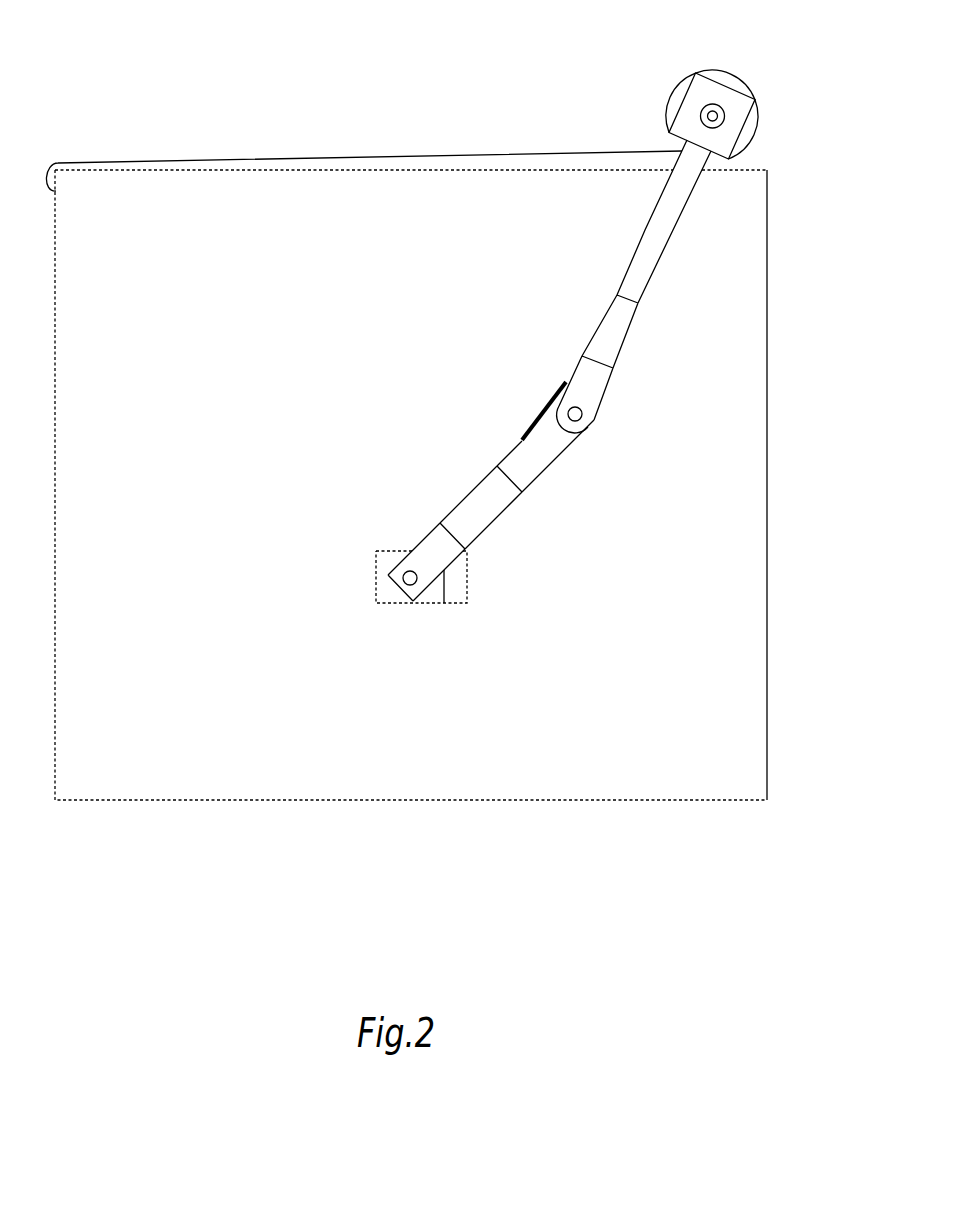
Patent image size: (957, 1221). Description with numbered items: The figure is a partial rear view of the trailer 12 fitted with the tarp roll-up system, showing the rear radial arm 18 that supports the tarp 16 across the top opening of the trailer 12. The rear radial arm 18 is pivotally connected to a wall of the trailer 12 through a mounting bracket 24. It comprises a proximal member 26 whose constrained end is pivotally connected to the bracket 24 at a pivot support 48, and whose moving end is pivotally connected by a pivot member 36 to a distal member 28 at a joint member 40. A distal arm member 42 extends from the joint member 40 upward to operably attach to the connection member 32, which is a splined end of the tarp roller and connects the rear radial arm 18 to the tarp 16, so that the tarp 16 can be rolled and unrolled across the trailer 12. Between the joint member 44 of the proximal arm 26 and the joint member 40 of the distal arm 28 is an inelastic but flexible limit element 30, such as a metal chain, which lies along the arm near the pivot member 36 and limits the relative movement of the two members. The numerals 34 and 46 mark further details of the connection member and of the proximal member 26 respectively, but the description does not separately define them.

The trailer 12 is at (727, 567).
The tarp 16 is at (250, 159).
The rear radial arm 18 is at (584, 335).
The mounting bracket 24 is at (382, 560).
The proximal member 26 is at (497, 482).
The distal member 28 is at (637, 280).
The limit element 30 is at (549, 408).
The connection member 32 is at (725, 135).
The pivot pin 34 is at (721, 113).
The pivot member 36 is at (576, 417).
The joint member 40 is at (605, 377).
The distal arm member 42 is at (685, 175).
The joint member 44 is at (546, 456).
The lower arm middle section 46 is at (482, 516).
The pivot support 48 is at (433, 541).